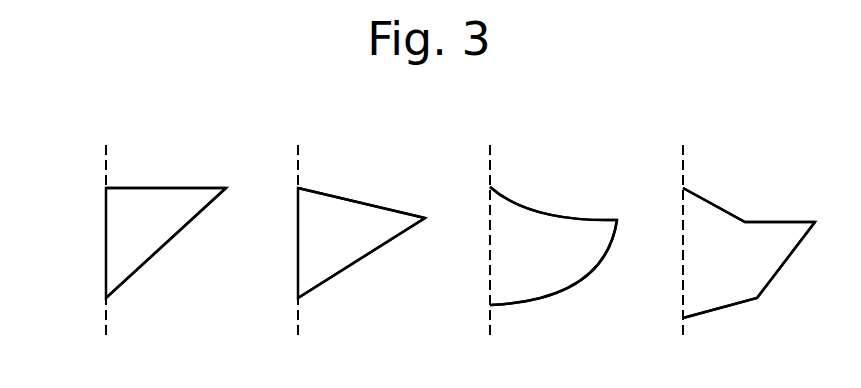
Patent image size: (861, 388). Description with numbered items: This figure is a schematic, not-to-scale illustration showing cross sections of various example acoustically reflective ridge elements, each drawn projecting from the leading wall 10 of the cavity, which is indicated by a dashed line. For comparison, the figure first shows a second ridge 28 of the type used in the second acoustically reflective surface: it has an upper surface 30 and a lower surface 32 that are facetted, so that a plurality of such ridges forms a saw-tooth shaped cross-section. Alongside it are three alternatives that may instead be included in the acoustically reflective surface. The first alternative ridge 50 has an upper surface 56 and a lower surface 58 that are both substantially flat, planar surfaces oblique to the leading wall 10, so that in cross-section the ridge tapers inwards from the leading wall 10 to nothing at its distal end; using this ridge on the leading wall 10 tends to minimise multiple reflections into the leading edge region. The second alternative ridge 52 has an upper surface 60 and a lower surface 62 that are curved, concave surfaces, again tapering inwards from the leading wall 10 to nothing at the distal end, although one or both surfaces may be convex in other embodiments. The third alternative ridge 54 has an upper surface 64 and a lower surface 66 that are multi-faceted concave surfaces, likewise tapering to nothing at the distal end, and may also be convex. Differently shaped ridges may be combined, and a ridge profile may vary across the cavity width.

The leading wall 10 is at (106, 271).
The second ridge 28 is at (135, 211).
The upper surface 30 is at (167, 188).
The lower surface 32 is at (142, 268).
The first alternative ridge 50 is at (316, 210).
The second alternative ridge 52 is at (507, 222).
The third alternative ridge 54 is at (697, 213).
The upper surface 56 is at (363, 200).
The lower surface 58 is at (345, 270).
The upper surface 60 is at (558, 217).
The lower surface 62 is at (537, 305).
The upper surface 64 is at (733, 218).
The lower surface 66 is at (735, 302).